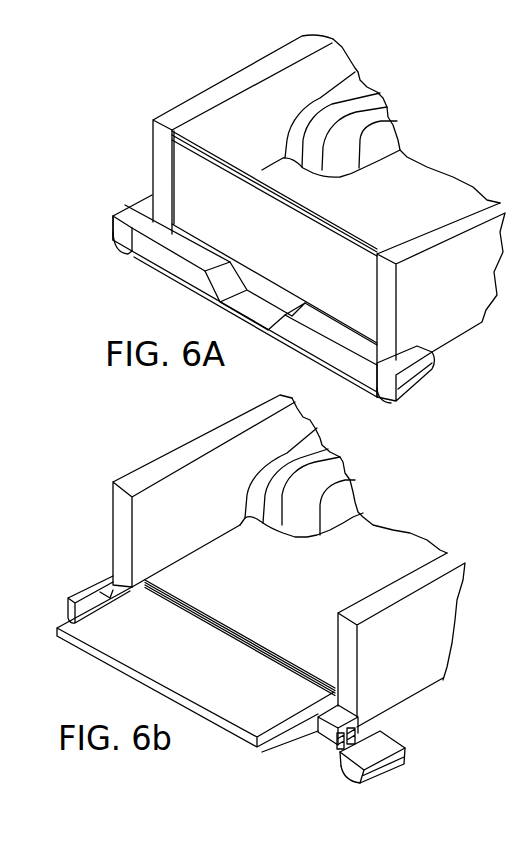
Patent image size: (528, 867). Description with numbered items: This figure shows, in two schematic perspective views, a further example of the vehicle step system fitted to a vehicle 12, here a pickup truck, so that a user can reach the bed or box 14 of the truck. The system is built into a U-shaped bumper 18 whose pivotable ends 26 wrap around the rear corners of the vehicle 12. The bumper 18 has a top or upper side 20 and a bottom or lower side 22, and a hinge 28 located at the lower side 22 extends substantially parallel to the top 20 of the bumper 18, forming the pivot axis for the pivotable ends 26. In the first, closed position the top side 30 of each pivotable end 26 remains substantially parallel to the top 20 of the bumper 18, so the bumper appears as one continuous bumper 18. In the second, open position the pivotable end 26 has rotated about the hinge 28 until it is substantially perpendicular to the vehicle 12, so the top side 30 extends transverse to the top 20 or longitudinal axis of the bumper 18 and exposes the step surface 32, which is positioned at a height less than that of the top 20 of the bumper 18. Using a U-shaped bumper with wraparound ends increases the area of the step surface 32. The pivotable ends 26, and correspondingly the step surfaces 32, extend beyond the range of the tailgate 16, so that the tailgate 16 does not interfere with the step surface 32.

In FIG. 6A, the vehicle 12 is at (201, 108).
In FIG. 6b, the vehicle 12 is at (167, 450).
In FIG. 6A, the bed or box 14 is at (437, 176).
In FIG. 6b, the bed or box 14 is at (388, 537).
In FIG. 6A, the tailgate 16 is at (340, 226).
In FIG. 6b, the tailgate 16 is at (233, 740).
In FIG. 6A, the bumper 18 is at (163, 263).
In FIG. 6b, the bumper 18 is at (318, 748).
In FIG. 6A, the top or upper side 20 is at (314, 317).
In FIG. 6b, the top or upper side 20 is at (341, 717).
In FIG. 6A, the bottom or lower side 22 is at (332, 377).
In FIG. 6b, the bottom or lower side 22 is at (303, 738).
In FIG. 6A, the pivotable end 26 is at (110, 230).
In FIG. 6b, the pivotable end 26 is at (348, 770).
In FIG. 6A, the hinge 28 is at (128, 251).
In FIG. 6b, the hinge 28 is at (358, 724).
In FIG. 6A, the top side of the end 30 is at (150, 204).
In FIG. 6b, the top side of the end 30 is at (388, 766).
In FIG. 6b, the step surface 32 is at (382, 741).